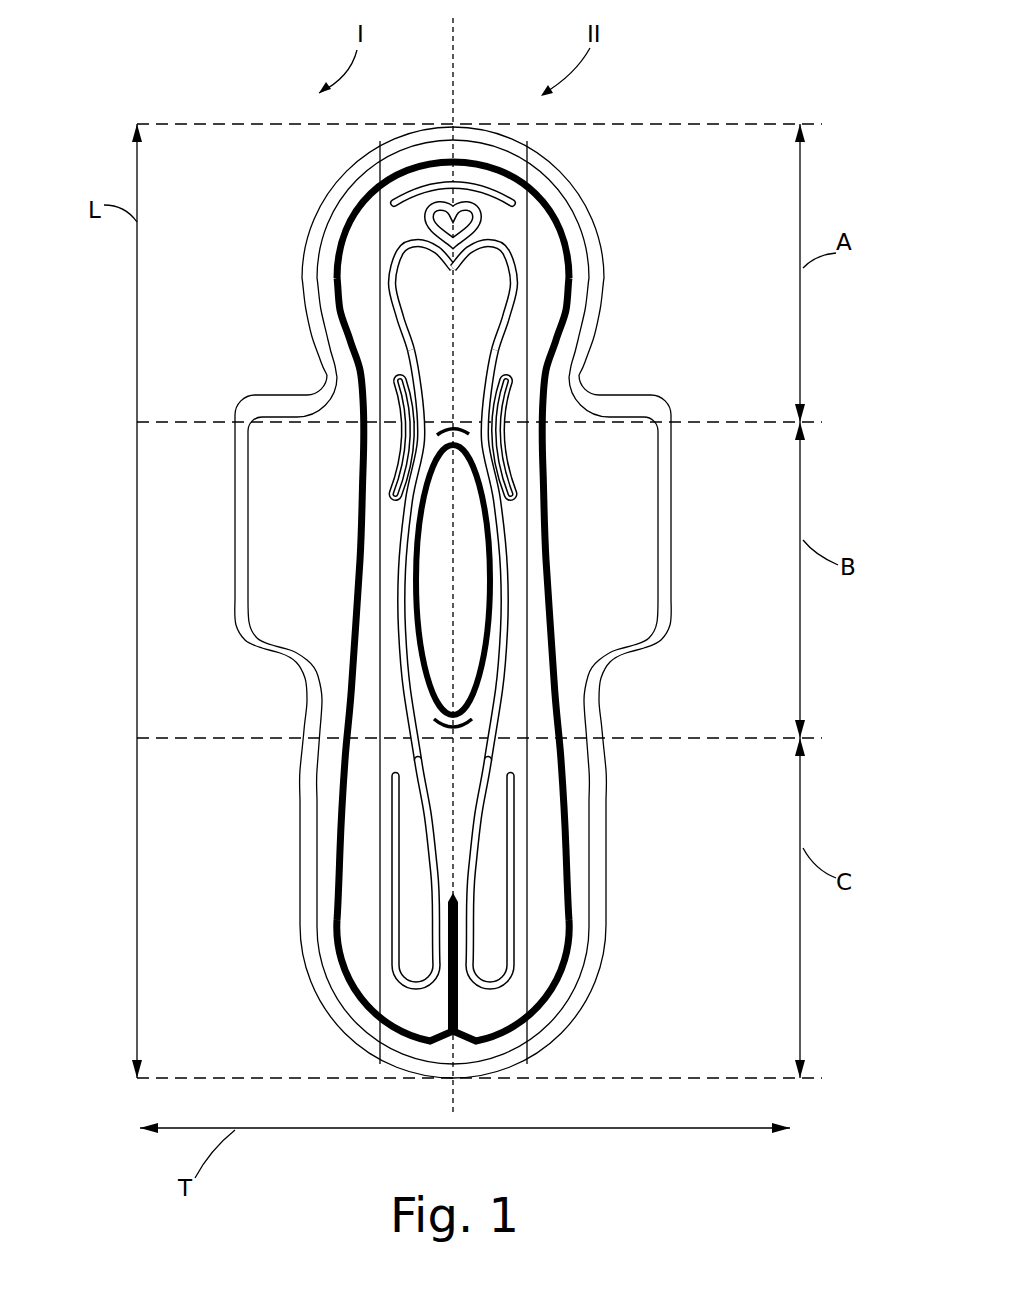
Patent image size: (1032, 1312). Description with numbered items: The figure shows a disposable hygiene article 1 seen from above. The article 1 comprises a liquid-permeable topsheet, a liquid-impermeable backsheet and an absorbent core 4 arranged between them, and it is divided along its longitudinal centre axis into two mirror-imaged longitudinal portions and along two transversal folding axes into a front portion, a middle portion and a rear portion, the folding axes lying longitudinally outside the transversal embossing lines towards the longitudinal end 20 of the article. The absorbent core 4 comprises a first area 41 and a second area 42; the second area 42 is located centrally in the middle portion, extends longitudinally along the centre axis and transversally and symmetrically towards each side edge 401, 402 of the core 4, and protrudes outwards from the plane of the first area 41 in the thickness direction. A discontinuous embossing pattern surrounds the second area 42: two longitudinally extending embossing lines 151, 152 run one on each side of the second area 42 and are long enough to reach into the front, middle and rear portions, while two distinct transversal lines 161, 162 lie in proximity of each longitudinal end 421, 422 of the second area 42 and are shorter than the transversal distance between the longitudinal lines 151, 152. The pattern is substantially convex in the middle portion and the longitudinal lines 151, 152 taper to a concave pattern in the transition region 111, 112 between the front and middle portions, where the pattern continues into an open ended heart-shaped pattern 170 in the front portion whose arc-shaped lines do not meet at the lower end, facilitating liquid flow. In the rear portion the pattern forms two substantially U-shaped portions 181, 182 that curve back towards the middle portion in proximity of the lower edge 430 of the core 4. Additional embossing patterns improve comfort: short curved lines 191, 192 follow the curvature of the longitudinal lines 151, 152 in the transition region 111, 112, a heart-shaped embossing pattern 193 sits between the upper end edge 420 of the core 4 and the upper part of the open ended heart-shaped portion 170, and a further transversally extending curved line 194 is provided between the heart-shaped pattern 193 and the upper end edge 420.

The disposable hygiene article 1 is at (463, 76).
The absorbent core 4 is at (338, 798).
The longitudinal end 20 is at (465, 123).
The first area 41 is at (364, 702).
The second area 42 is at (474, 612).
The transition region 111 is at (348, 413).
The transition region 112 is at (555, 413).
The longitudinally extending embossing line 151 is at (400, 538).
The longitudinally extending embossing line 152 is at (507, 508).
The transversal embossing line 161 is at (438, 432).
The transversal embossing line 162 is at (478, 726).
The open ended heart-shaped pattern 170 is at (500, 291).
The U-shaped portion 181 is at (386, 897).
The U-shaped portion 182 is at (521, 895).
The embossing pattern 191 is at (393, 488).
The embossing pattern 192 is at (508, 450).
The heart-shaped embossing pattern 193 is at (433, 230).
The curved line 194 is at (394, 200).
The side edge of the core 401 is at (297, 653).
The side edge of the core 402 is at (558, 650).
The upper end edge of the core 420 is at (460, 158).
The longitudinal end of the second area 421 is at (432, 452).
The longitudinal end of the second area 422 is at (467, 707).
The lower edge of the core 430 is at (479, 1031).